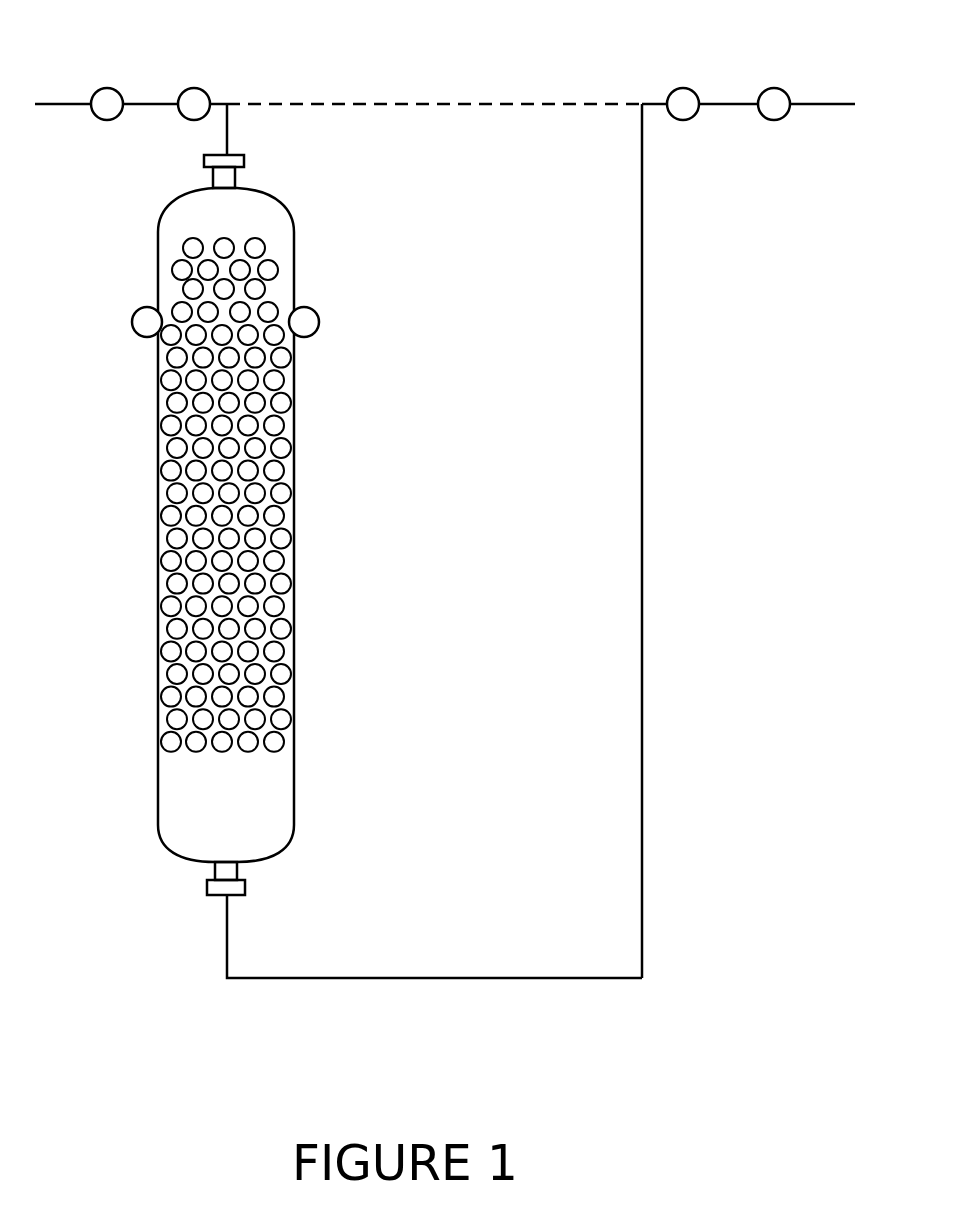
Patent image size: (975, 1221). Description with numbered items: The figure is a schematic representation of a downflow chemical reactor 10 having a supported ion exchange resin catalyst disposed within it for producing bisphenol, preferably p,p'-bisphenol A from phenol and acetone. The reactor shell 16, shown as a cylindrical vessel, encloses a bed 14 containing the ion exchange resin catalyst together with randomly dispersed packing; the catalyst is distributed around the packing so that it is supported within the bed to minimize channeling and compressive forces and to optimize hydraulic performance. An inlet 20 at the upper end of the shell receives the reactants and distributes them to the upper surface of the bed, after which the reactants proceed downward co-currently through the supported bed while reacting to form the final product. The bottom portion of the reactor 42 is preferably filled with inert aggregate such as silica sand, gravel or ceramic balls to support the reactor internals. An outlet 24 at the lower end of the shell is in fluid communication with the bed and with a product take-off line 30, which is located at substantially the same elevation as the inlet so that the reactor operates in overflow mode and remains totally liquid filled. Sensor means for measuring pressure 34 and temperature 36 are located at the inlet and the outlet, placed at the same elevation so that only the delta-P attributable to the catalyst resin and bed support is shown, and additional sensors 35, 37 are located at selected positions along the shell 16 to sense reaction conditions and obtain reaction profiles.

The reactor 10 is at (131, 845).
The bed 14 is at (290, 451).
The reactor shell 16 is at (165, 203).
The inlet 20 is at (250, 180).
The outlet 24 is at (207, 893).
The product take-off line 30 is at (642, 486).
The pressure sensor means 34 is at (104, 88).
The temperature sensor means 36 is at (193, 88).
The additional sensor 35 is at (132, 327).
The additional sensor 37 is at (318, 327).
The bottom portion of the reactor 42 is at (256, 829).